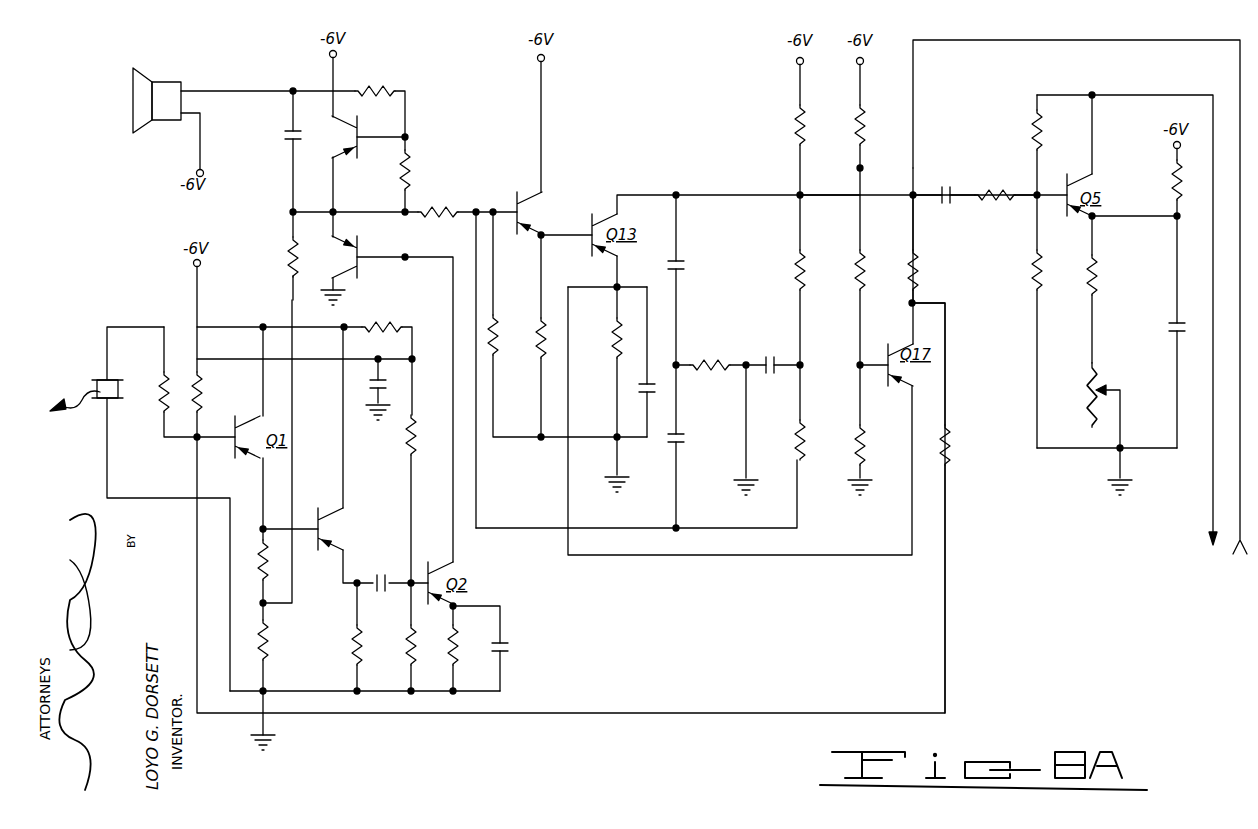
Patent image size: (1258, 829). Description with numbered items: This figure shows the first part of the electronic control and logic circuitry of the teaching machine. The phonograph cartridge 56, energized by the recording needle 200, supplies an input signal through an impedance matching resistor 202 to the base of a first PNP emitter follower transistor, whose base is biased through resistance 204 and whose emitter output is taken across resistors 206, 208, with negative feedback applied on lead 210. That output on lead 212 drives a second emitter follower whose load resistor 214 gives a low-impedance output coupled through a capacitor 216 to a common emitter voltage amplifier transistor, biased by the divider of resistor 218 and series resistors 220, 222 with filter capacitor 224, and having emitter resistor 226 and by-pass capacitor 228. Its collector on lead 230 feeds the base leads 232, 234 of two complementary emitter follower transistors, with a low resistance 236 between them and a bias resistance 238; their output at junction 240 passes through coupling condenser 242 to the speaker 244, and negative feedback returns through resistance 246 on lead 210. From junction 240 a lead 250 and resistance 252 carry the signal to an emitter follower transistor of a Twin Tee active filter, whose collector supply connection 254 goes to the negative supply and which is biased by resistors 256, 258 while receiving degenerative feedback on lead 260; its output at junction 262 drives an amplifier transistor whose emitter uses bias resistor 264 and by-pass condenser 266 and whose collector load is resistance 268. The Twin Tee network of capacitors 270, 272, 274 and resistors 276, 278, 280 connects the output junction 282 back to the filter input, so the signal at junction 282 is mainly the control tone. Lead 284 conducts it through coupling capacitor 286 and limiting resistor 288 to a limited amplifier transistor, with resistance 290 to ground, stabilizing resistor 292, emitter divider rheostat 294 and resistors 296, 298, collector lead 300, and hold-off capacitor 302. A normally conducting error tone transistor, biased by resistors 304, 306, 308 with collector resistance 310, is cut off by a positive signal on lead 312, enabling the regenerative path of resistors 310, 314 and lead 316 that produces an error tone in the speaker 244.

The phonograph cartridge 56 is at (97, 378).
The recording needle 200 is at (73, 405).
The impedance matching resistor 202 is at (155, 395).
The resistance 204 is at (205, 392).
The resistor 206 is at (272, 568).
The resistor 208 is at (270, 647).
The lead 210 is at (291, 300).
The lead 212 is at (292, 528).
The load resistor 214 is at (350, 646).
The capacitor 216 is at (395, 580).
The resistor 218 is at (405, 645).
The series resistor 220 is at (418, 436).
The series resistor 222 is at (385, 320).
The filter capacitor 224 is at (398, 385).
The resistor 226 is at (447, 647).
The by-pass capacitor 228 is at (508, 645).
The lead 230 is at (468, 482).
The base lead 232 is at (370, 258).
The base lead 234 is at (372, 138).
The resistance 236 is at (412, 168).
The resistance 238 is at (368, 90).
The junction 240 is at (334, 210).
The coupling condenser 242 is at (289, 138).
The speaker 244 is at (148, 78).
The resistance 246 is at (291, 256).
The lead 250 is at (355, 212).
The resistance 252 is at (425, 212).
The conductor 254 is at (544, 108).
The resistor 256 is at (534, 345).
The resistor 258 is at (500, 340).
The lead 260 is at (500, 528).
The junction 262 is at (543, 238).
The bias resistor 264 is at (610, 338).
The by-pass condenser 266 is at (643, 392).
The resistance 268 is at (795, 130).
The capacitor 270 is at (678, 262).
The capacitor 272 is at (762, 358).
The capacitor 274 is at (679, 428).
The resistor 276 is at (720, 355).
The resistor 278 is at (795, 270).
The resistor 280 is at (793, 440).
The output junction 282 is at (800, 195).
The lead 284 is at (848, 198).
The coupling capacitor 286 is at (962, 200).
The limiting resistor 288 is at (972, 178).
The resistance 290 is at (1028, 280).
The stabilizing resistor 292 is at (1032, 138).
The rheostat 294 is at (1098, 395).
The resistor 296 is at (1098, 270).
The resistor 298 is at (1172, 180).
The lead 300 is at (1125, 95).
The capacitor 302 is at (1172, 333).
The resistor 304 is at (870, 448).
The resistor 306 is at (853, 267).
The resistor 308 is at (866, 130).
The resistance 310 is at (920, 270).
The lead 312 is at (968, 40).
The resistor 314 is at (952, 443).
The lead 316 is at (195, 470).